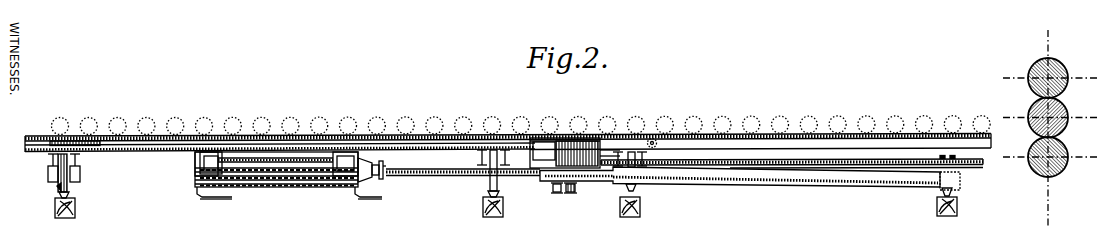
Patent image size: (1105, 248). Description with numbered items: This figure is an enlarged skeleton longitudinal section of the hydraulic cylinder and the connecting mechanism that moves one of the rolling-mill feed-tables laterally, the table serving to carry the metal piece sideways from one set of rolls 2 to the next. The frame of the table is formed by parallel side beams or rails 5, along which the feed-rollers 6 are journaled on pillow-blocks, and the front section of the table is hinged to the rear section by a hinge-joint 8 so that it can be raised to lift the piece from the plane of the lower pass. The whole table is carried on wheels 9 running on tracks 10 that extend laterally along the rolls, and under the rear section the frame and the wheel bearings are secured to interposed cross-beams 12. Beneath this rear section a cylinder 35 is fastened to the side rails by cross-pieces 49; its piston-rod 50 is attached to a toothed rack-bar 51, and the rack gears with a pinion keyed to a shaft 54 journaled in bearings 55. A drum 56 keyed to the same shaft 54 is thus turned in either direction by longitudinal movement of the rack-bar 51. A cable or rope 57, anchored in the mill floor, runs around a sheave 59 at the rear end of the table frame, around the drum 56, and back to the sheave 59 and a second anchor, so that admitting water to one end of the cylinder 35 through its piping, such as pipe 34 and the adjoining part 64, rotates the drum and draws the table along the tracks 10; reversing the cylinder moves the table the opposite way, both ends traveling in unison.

The set of rolls 2 is at (1051, 128).
The side beams or rails 5 is at (391, 134).
The feed-rollers 6 is at (668, 119).
The hinge-joint 8 is at (657, 142).
The wheels 9 is at (57, 187).
The tracks 10 is at (70, 192).
The cross-beams 12 is at (79, 161).
The pipe 34 is at (368, 201).
The cylinder 35 is at (290, 179).
The cross-pieces 49 is at (213, 150).
The piston-rod 50 is at (463, 180).
The toothed rack-bar 51 is at (601, 184).
The shaft 54 is at (556, 194).
The bearings 55 is at (575, 194).
The drum 56 is at (575, 153).
The cable or rope 57 is at (152, 151).
The sheave 59 is at (62, 135).
The bracket 64 is at (214, 203).